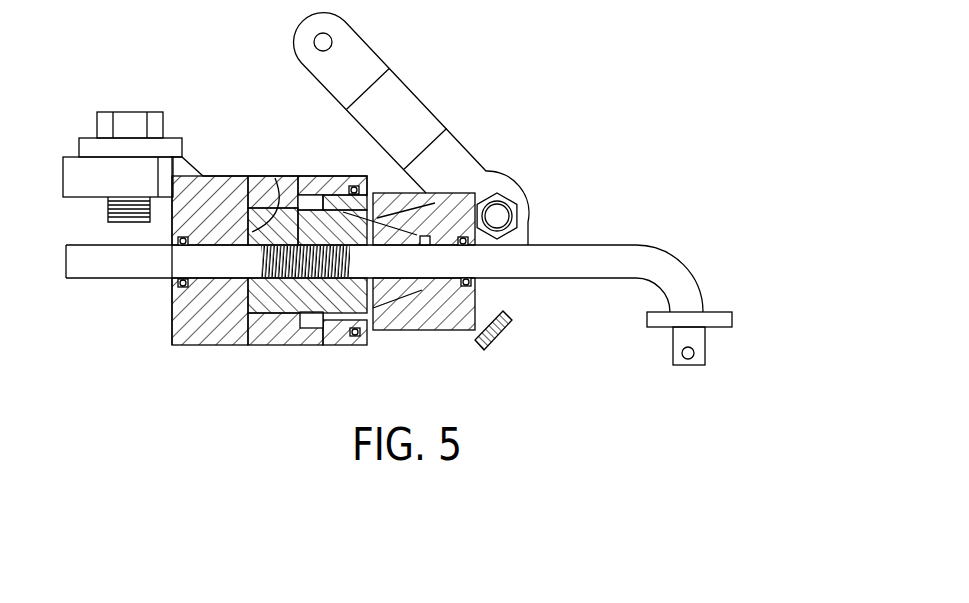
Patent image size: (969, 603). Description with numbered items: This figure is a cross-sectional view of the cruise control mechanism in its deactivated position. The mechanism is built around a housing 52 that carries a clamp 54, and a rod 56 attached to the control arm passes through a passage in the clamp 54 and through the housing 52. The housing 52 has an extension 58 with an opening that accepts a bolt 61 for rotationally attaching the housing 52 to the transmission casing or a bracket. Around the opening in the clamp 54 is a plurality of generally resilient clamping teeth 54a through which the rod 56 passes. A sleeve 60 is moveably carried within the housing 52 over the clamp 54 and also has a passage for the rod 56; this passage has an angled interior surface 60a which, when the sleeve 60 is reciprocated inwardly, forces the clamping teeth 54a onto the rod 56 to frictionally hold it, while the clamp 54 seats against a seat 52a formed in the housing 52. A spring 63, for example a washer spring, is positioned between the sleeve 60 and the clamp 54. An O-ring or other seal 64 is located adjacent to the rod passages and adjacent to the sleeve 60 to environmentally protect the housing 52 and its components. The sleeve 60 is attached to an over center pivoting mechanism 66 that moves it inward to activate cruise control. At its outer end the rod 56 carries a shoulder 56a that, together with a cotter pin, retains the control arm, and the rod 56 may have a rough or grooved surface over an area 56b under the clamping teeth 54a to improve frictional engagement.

The housing 52 is at (172, 331).
The seat 52a is at (275, 178).
The clamp 54 is at (262, 301).
The clamping teeth 54a is at (447, 200).
The rod 56 is at (578, 245).
The shoulder 56a is at (646, 318).
The rough surface area 56b is at (293, 283).
The extension 58 is at (75, 177).
The sleeve 60 is at (393, 193).
The angled interior surface 60a is at (400, 290).
The bolt 61 is at (128, 112).
The spring 63 is at (417, 282).
The seal 64 is at (180, 285).
The over center pivoting mechanism 66 is at (536, 186).